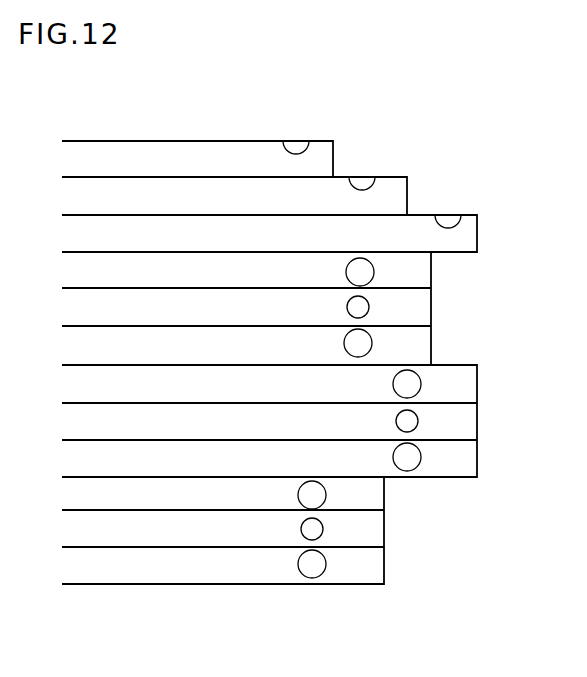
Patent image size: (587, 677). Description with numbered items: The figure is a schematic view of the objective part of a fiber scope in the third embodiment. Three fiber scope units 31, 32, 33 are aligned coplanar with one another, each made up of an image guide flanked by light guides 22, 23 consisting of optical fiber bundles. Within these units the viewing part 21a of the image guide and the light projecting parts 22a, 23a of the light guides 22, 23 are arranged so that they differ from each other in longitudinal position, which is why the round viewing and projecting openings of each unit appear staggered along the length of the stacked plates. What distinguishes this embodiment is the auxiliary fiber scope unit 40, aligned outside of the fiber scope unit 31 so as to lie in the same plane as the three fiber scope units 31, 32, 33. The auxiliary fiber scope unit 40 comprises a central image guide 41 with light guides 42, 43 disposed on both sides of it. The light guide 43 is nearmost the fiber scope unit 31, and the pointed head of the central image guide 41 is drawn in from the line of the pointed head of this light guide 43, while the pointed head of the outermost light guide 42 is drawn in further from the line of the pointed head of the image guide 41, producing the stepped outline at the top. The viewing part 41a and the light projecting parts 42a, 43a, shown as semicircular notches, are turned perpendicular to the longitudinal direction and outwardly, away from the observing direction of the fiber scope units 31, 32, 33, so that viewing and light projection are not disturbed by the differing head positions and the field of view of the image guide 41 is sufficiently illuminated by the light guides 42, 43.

The auxiliary fiber scope unit 40 is at (288, 172).
The central image guide 41 is at (238, 154).
The outermost light guide 42 is at (197, 137).
The light guide 43 is at (288, 176).
The viewing part 41a is at (368, 177).
The light projecting part 42a is at (290, 142).
The light projecting part 43a is at (452, 216).
The fiber scope unit 31 is at (317, 308).
The fiber scope unit 32 is at (489, 428).
The fiber scope unit 33 is at (274, 567).
The viewing part 21a is at (369, 307).
The light projecting part 22a is at (374, 272).
The light projecting part 23a is at (372, 343).
The light guide 22 is at (200, 500).
The light guide 23 is at (257, 577).